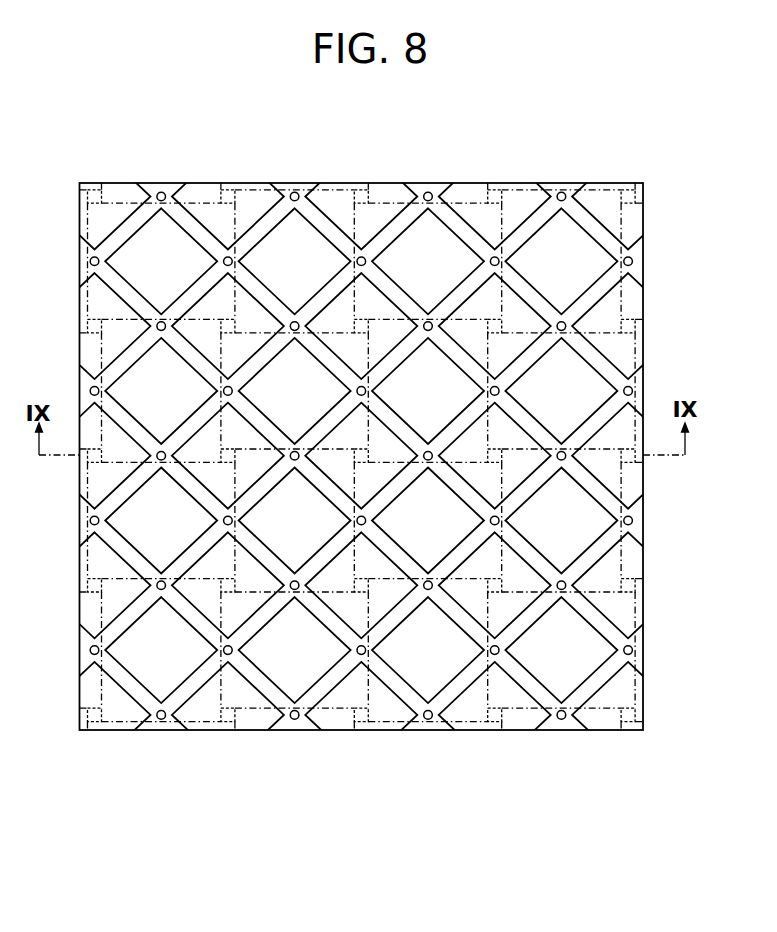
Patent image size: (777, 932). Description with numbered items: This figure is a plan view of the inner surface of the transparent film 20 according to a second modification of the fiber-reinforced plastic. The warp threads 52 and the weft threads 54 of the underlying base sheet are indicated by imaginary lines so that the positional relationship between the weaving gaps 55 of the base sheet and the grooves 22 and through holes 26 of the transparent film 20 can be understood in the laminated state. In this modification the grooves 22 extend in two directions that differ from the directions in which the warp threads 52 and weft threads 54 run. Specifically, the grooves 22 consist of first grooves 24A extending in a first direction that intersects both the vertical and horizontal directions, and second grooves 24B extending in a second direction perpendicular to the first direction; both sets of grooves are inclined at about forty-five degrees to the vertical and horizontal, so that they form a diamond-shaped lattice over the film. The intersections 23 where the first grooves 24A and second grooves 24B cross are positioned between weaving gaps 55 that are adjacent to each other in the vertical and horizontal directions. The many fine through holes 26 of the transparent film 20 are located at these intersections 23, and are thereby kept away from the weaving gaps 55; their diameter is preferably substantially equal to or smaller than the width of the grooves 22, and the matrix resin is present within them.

The transparent film 20 is at (627, 174).
The grooves 22 is at (600, 412).
The intersections 23 is at (572, 589).
The first grooves 24A is at (255, 224).
The second grooves 24B is at (256, 676).
The through holes 26 is at (565, 323).
The warp threads 52 is at (336, 210).
The weft threads 54 is at (120, 217).
The weaving gaps 55 is at (237, 711).